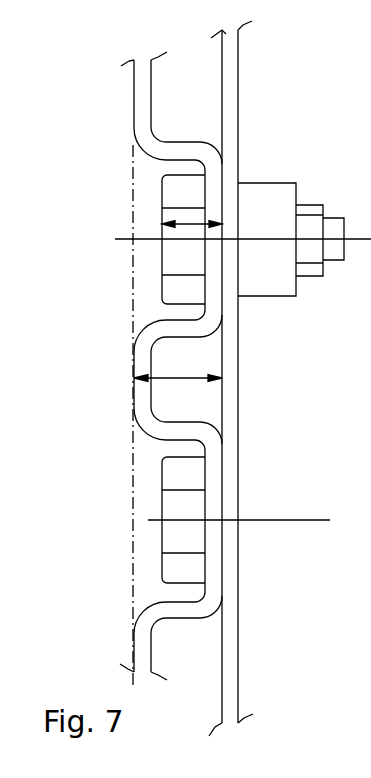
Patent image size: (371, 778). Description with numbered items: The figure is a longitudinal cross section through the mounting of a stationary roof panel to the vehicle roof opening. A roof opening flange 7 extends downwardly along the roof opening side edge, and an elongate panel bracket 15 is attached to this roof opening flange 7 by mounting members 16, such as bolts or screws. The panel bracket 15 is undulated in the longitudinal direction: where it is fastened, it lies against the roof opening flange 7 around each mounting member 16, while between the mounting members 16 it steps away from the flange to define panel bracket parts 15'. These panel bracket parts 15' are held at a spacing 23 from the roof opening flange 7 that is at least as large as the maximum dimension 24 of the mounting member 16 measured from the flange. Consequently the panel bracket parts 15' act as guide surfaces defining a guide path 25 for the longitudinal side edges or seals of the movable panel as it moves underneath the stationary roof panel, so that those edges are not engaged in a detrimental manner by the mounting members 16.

The roof opening flange 7 is at (229, 391).
The panel bracket 15 is at (137, 215).
The panel bracket part 15' is at (161, 529).
The mounting member 16 is at (176, 265).
The spacing 23 is at (178, 378).
The maximum dimension 24 is at (184, 222).
The guide path 25 is at (133, 547).